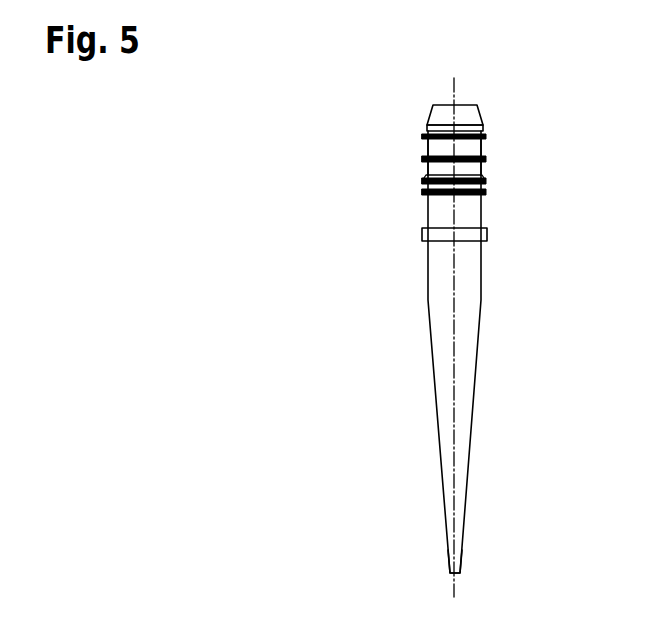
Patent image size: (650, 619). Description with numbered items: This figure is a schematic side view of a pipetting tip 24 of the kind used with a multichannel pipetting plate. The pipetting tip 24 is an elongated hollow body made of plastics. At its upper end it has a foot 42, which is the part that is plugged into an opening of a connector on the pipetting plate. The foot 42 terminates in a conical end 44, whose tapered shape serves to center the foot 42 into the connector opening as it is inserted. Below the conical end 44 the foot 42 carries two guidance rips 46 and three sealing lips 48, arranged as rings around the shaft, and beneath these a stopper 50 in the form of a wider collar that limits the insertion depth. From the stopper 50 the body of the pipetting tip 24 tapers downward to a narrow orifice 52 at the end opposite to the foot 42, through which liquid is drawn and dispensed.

The pipetting tip 24 is at (321, 176).
The foot 42 is at (549, 174).
The conical end 44 is at (483, 119).
The guidance rips 46 is at (487, 134).
The sealing lips 48 is at (427, 195).
The stopper 50 is at (488, 234).
The orifice 52 is at (460, 574).